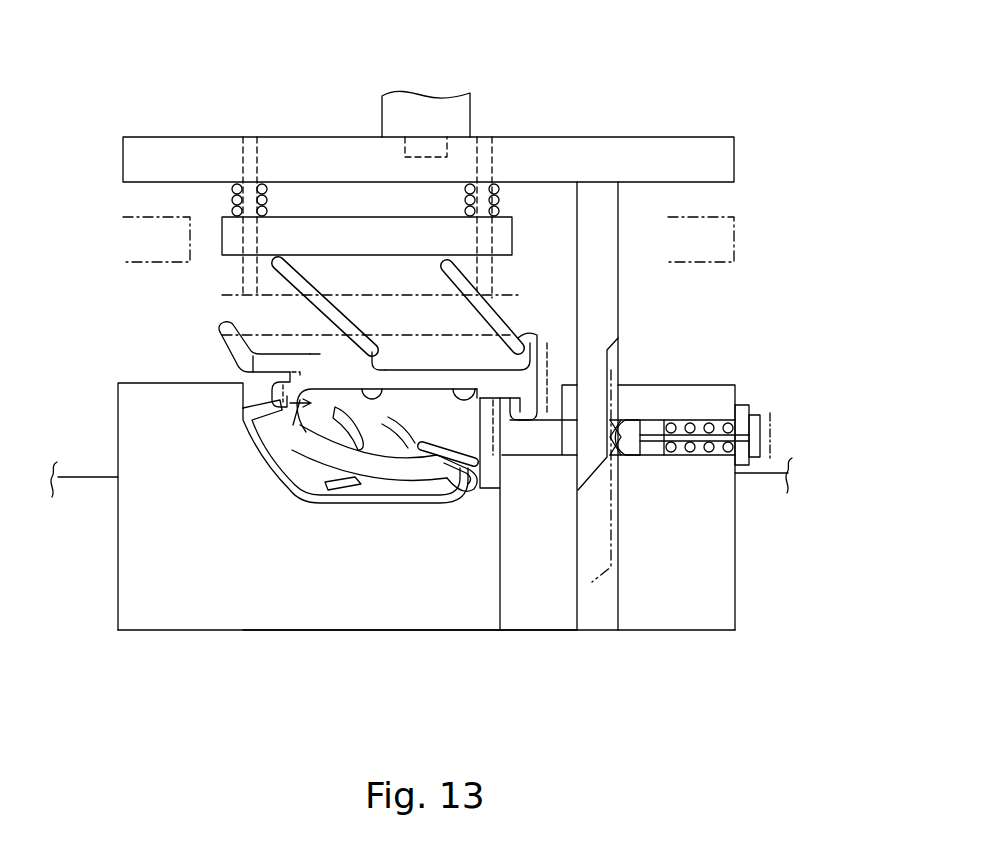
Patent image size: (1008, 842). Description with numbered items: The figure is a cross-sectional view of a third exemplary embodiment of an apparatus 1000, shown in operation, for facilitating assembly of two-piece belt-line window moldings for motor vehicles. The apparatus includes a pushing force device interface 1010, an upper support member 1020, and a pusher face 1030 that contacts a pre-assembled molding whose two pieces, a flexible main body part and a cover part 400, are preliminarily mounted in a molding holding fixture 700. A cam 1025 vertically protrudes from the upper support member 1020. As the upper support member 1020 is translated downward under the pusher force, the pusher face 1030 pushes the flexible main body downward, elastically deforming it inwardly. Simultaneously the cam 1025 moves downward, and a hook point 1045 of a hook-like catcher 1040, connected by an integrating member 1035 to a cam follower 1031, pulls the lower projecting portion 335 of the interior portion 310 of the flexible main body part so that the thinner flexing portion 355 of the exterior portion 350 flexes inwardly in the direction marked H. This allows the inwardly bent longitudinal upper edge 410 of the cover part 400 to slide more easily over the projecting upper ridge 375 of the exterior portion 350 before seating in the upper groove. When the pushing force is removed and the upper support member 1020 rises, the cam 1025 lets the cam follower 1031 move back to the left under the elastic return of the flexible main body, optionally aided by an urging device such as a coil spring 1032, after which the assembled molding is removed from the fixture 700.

The apparatus 1000 is at (754, 282).
The pushing force device interface 1010 is at (386, 122).
The upper support member 1020 is at (718, 167).
The cam 1025 is at (602, 315).
The pusher face 1030 is at (498, 236).
The cam follower 1031 is at (717, 437).
The coil spring 1032 is at (712, 452).
The integrating member 1035 is at (677, 391).
The hook-like catcher 1040 is at (530, 445).
The hook point 1045 is at (502, 630).
The molding holding fixture 700 is at (548, 640).
The interior portion 310 is at (334, 360).
The lower projecting portion 335 is at (548, 368).
The exterior portion 350 is at (410, 478).
The thinner flexing portion 355 is at (287, 417).
The projecting upper ridge 375 is at (272, 385).
The cover part 400 is at (357, 508).
The inwardly bent longitudinal upper edge 410 is at (272, 413).